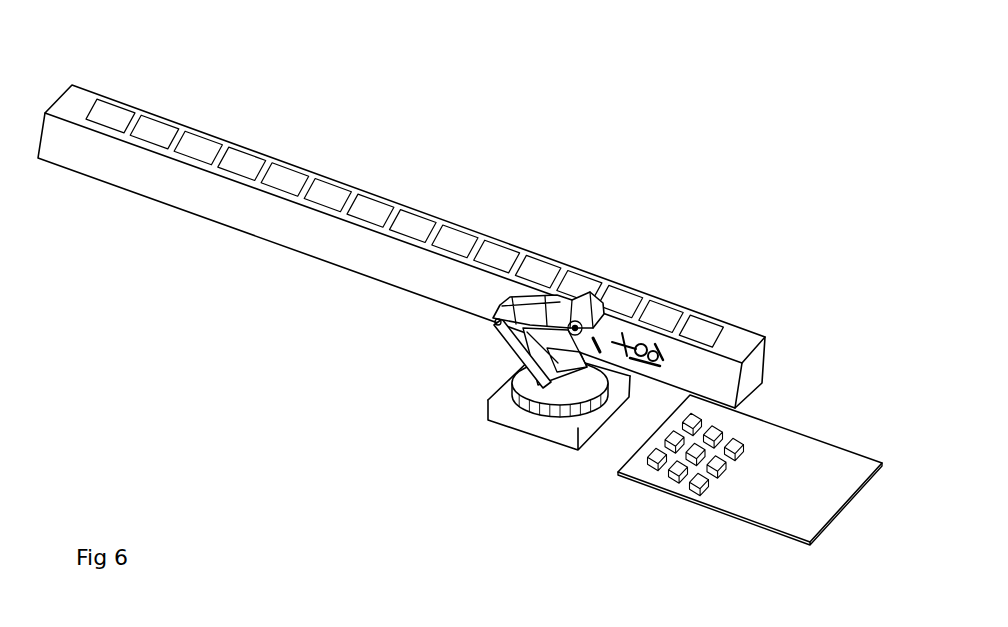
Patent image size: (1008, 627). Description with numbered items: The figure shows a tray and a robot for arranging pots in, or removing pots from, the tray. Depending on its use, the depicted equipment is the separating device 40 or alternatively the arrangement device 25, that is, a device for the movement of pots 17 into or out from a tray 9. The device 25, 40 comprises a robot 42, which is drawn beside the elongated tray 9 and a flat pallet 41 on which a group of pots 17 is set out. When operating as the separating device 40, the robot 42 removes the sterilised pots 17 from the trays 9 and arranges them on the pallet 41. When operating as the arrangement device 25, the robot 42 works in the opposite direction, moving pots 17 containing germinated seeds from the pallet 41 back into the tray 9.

The tray 9 is at (733, 338).
The pots 17 is at (710, 460).
The arrangement device 25 is at (474, 401).
The separating device 40 is at (474, 401).
The pallet 41 is at (795, 467).
The robot 42 is at (500, 455).